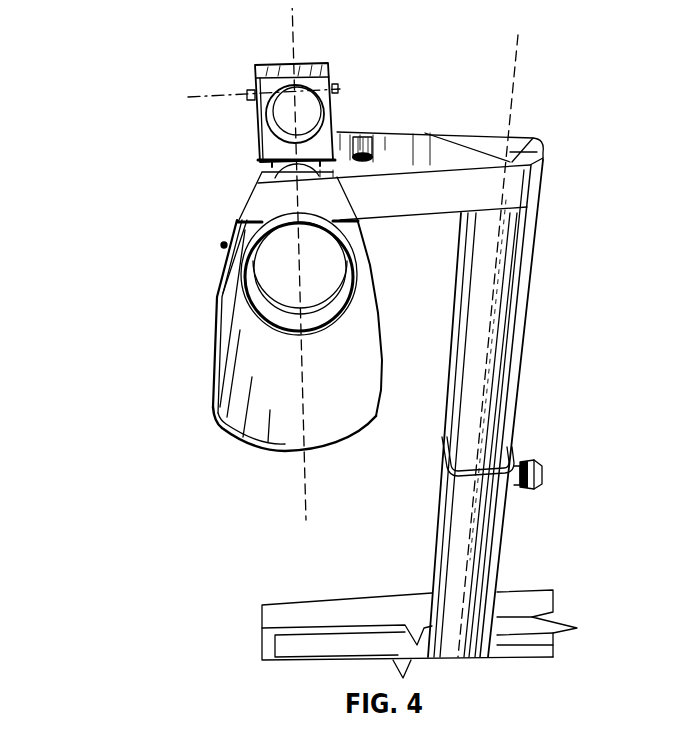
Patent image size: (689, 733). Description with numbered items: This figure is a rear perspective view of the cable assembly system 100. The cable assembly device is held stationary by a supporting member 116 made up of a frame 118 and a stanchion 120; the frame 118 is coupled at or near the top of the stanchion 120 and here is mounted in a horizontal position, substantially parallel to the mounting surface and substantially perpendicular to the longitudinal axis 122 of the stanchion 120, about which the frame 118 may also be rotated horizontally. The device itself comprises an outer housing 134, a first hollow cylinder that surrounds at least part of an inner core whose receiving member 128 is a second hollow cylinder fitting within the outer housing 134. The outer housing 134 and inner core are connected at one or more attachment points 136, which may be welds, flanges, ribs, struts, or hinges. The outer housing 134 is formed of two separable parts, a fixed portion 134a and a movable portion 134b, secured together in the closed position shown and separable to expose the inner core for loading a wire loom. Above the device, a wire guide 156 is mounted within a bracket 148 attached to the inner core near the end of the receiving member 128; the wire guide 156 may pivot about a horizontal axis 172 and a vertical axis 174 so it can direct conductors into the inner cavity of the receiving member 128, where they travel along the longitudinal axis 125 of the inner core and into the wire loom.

The cable assembly system 100 is at (112, 48).
The supporting member 116 is at (545, 258).
The frame 118 is at (435, 208).
The stanchion 120 is at (507, 377).
The longitudinal axis of the stanchion 122 is at (515, 70).
The longitudinal axis of the inner core 125 is at (308, 500).
The receiving member 128 is at (352, 305).
The outer housing 134 is at (92, 228).
The fixed portion 134a is at (220, 262).
The movable portion 134b is at (213, 343).
The attachment points 136 is at (240, 222).
The bracket 148 is at (336, 97).
The wire guide 156 is at (308, 68).
The horizontal axis 172 is at (208, 96).
The vertical axis 174 is at (290, 25).